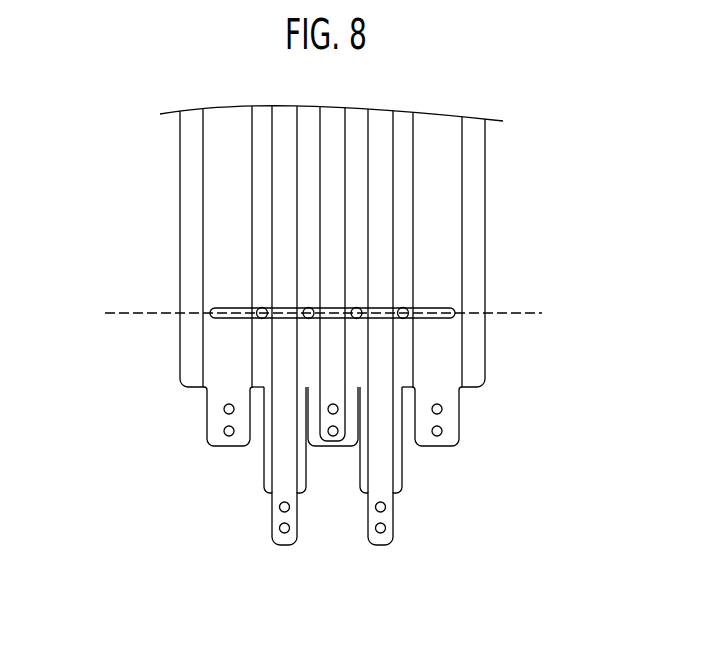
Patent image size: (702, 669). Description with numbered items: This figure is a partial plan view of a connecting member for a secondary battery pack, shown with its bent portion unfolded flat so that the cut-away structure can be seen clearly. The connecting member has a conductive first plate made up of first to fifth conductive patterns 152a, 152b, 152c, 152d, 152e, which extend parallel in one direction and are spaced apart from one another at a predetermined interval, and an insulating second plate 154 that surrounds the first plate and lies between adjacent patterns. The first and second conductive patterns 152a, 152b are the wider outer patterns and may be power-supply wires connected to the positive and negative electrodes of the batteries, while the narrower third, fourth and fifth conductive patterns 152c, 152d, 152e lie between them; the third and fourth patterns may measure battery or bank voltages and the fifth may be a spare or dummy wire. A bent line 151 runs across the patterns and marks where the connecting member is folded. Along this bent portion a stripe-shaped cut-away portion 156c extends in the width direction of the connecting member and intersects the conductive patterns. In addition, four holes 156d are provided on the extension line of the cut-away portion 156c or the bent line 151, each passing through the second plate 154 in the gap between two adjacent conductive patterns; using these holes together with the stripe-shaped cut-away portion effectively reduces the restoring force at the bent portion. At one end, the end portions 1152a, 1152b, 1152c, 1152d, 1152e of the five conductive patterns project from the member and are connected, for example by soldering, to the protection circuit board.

The bent line 151 is at (120, 312).
The first conductive pattern 152a is at (215, 153).
The second conductive pattern 152b is at (445, 163).
The third conductive pattern 152c is at (282, 211).
The fourth conductive pattern 152d is at (378, 212).
The fifth conductive pattern 152e is at (330, 247).
The insulating second plate 154 is at (480, 370).
The cut-away portion 156c is at (456, 308).
The hole 156d is at (407, 320).
The end portion of first conductive pattern 1152a is at (222, 431).
The end portion of second conductive pattern 1152b is at (453, 430).
The end portion of third conductive pattern 1152c is at (285, 533).
The end portion of fourth conductive pattern 1152d is at (380, 533).
The end portion of fifth conductive pattern 1152e is at (333, 440).